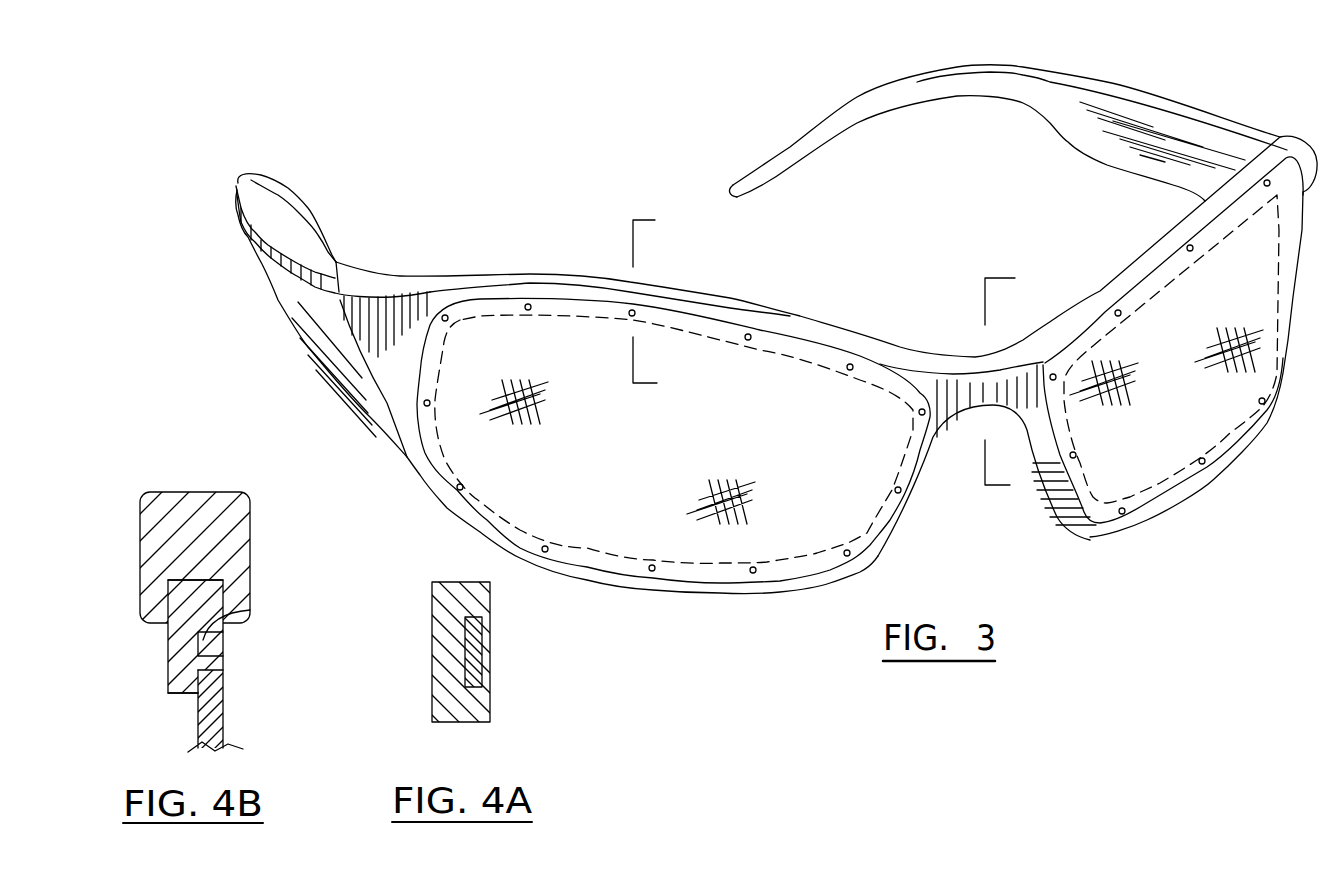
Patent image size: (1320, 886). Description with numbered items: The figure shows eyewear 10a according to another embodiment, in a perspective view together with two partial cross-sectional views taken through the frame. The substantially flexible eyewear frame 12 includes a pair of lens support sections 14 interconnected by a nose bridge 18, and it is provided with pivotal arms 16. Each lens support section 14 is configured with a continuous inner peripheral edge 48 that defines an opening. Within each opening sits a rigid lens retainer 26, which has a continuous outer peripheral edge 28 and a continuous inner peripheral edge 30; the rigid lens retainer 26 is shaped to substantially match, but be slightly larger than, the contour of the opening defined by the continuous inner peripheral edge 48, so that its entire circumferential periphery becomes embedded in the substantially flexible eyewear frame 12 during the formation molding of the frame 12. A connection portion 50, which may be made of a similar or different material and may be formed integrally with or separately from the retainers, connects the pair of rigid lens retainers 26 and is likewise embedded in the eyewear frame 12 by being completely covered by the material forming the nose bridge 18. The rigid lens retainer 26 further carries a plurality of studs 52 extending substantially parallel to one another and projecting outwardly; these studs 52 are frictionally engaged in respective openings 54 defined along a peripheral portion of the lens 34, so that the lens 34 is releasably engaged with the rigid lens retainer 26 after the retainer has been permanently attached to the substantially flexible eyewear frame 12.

In FIG. 3, the eyewear 10a is at (755, 123).
In FIG. 3, the substantially flexible eyewear frame 12 is at (412, 285).
In FIG. 4B, the substantially flexible eyewear frame 12 is at (140, 524).
In FIG. 3, the lens support section 14 is at (510, 275).
In FIG. 4B, the lens support section 14 is at (187, 493).
In FIG. 3, the pivotal arm 16 is at (256, 170).
In FIG. 3, the nose bridge 18 is at (953, 375).
In FIG. 4A, the nose bridge 18 is at (451, 582).
In FIG. 3, the rigid lens retainer 26 is at (711, 574).
In FIG. 4B, the rigid lens retainer 26 is at (168, 675).
In FIG. 4B, the continuous outer peripheral edge 28 is at (205, 578).
In FIG. 3, the continuous inner peripheral edge 30 is at (583, 547).
In FIG. 4B, the continuous inner peripheral edge 30 is at (179, 693).
In FIG. 3, the lens 34 is at (758, 447).
In FIG. 4B, the lens 34 is at (217, 724).
In FIG. 3, the continuous inner peripheral edge 48 is at (712, 328).
In FIG. 3, the connection portion 50 is at (947, 440).
In FIG. 4A, the connection portion 50 is at (482, 665).
In FIG. 4B, the stud 52 is at (212, 620).
In FIG. 4B, the opening 54 is at (227, 663).